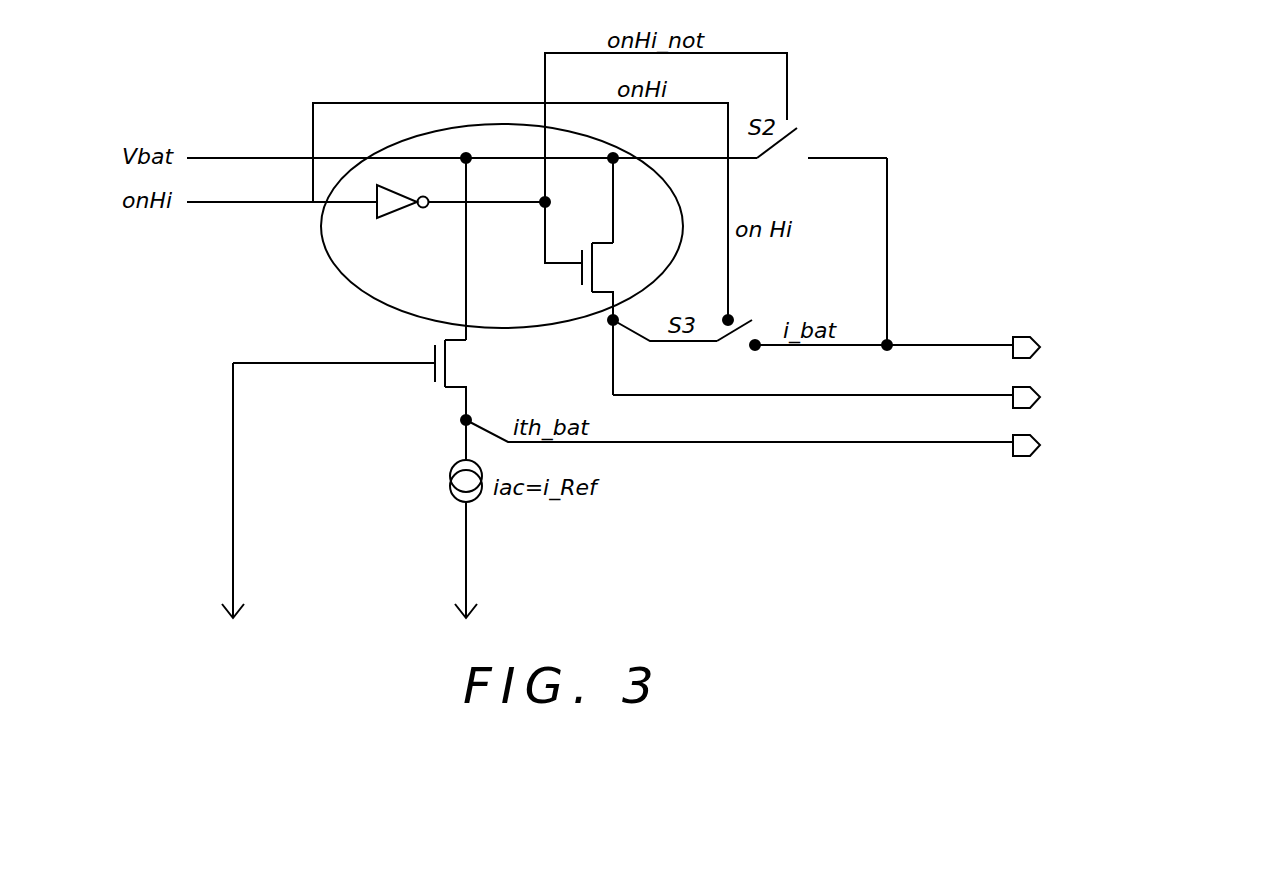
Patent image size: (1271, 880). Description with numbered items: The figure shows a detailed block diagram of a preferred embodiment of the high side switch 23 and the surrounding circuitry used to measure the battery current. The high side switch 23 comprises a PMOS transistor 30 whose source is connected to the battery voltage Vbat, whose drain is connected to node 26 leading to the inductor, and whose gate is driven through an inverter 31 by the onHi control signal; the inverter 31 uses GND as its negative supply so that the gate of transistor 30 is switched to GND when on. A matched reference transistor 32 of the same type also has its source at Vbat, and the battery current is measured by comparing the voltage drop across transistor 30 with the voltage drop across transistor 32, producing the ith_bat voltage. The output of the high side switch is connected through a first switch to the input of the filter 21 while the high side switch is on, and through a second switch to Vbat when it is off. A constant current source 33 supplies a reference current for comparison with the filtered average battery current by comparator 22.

The high side switch 23 is at (400, 145).
The PMOS transistor 30 is at (578, 277).
The inverter 31 is at (398, 209).
The reference transistor 32 is at (437, 340).
The constant current source 33 is at (450, 480).
The filter 21 is at (1093, 348).
The node 26 is at (1094, 397).
The comparator 22 is at (1105, 446).